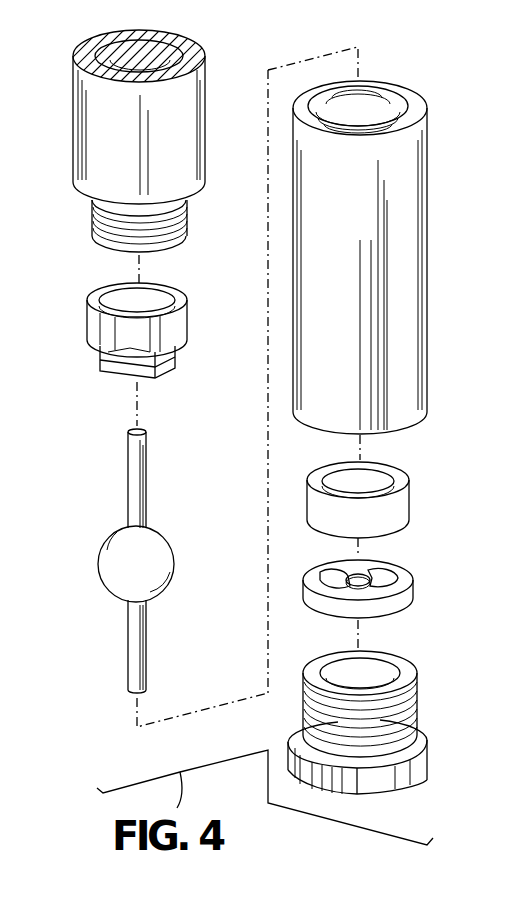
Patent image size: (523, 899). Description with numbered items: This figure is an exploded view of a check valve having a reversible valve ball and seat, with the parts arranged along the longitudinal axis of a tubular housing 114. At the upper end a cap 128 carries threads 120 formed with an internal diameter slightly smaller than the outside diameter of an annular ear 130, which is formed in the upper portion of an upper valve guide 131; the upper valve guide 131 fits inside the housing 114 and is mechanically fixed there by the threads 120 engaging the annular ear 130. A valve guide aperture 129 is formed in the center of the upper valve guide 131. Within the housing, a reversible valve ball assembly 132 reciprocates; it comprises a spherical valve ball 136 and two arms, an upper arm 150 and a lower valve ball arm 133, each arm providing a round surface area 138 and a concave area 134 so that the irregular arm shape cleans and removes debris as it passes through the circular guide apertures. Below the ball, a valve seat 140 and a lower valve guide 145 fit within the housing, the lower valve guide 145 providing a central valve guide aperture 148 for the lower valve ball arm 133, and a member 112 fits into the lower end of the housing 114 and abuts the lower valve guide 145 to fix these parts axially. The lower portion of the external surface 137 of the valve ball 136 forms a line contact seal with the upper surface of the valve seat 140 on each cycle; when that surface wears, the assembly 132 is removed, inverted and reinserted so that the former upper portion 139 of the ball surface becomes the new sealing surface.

The member 112 is at (425, 765).
The tubular housing 114 is at (405, 303).
The threads 120 is at (190, 232).
The cap 128 is at (82, 142).
The valve guide aperture 129 is at (122, 365).
The annular ear 130 is at (160, 293).
The upper valve guide 131 is at (170, 361).
The reversible valve ball assembly 132 is at (124, 564).
The lower valve ball arm 133 is at (150, 640).
The concave area 134 is at (128, 654).
The valve ball 136 is at (156, 555).
The lower portion of external surface 137 is at (168, 590).
The round surface area 138 is at (173, 680).
The upper portion of valve ball external surface 139 is at (118, 533).
The valve seat 140 is at (412, 504).
The lower valve guide 145 is at (391, 575).
The valve guide aperture 148 is at (380, 570).
The upper stem 150 is at (143, 480).